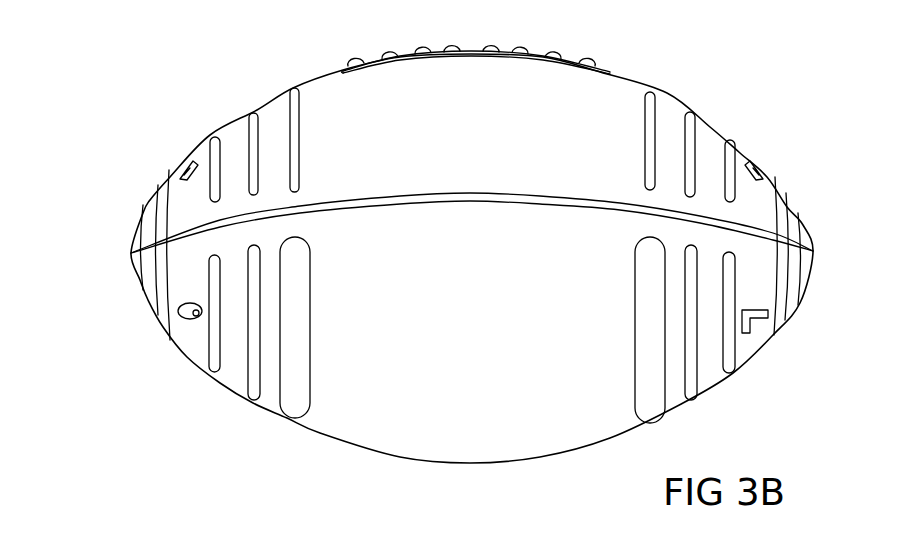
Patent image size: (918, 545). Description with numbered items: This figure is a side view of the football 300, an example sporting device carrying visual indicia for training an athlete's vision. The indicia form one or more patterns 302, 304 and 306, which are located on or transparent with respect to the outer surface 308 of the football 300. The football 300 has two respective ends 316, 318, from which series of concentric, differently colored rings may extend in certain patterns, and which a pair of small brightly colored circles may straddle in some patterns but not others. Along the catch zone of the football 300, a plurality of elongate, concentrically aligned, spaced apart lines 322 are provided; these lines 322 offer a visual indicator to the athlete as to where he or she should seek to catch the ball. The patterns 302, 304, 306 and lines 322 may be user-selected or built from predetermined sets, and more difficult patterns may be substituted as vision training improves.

The football 300 is at (733, 82).
The pattern 302 is at (795, 178).
The pattern 304 is at (782, 338).
The pattern 306 is at (155, 178).
The surface 308 is at (630, 77).
The end 316 is at (813, 251).
The end 318 is at (131, 254).
The elongate, concentrically aligned, spaced apart lines 322 is at (118, 262).